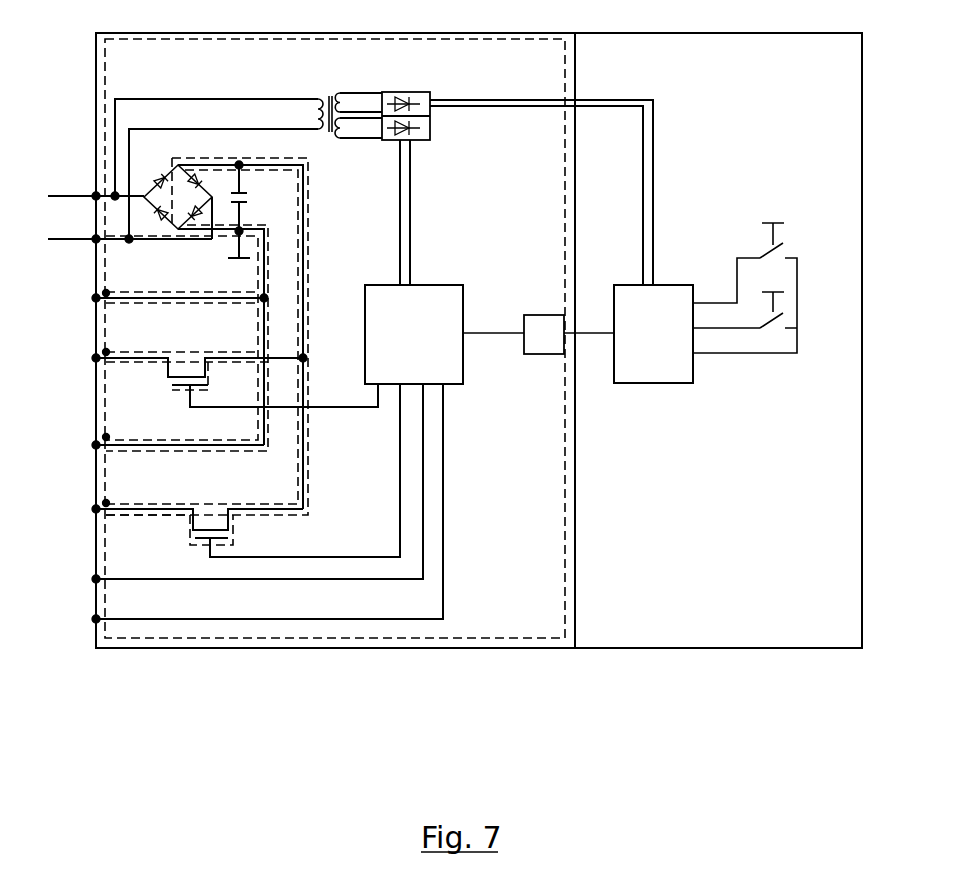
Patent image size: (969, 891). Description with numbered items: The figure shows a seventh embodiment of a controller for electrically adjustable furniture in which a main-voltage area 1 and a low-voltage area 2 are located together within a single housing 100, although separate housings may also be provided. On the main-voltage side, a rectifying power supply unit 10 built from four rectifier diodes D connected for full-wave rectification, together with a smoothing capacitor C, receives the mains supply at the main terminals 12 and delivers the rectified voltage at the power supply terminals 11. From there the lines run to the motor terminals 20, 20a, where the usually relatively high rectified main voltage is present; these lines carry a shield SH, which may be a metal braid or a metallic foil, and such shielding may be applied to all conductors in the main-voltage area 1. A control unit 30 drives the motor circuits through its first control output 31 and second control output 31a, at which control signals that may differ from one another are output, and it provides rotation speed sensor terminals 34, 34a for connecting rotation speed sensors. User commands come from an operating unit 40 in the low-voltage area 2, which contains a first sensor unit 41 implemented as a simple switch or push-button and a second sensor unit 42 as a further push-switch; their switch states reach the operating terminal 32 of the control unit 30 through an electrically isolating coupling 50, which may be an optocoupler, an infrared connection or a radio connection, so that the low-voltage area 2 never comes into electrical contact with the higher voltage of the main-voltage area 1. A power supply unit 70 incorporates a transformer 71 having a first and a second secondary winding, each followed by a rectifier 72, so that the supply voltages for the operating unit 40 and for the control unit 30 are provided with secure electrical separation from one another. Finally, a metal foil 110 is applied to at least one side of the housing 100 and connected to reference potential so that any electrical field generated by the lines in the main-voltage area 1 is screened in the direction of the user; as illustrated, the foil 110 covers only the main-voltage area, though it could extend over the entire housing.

The main-voltage area 1 is at (258, 665).
The low-voltage area 2 is at (634, 665).
The rectifying power supply unit 10 is at (157, 155).
The power supply terminals 11 is at (264, 298).
The main terminals 12 is at (96, 239).
The motor terminal 20 is at (96, 358).
The motor terminal 20a is at (96, 445).
The control unit 30 is at (465, 285).
The control output 31 is at (376, 407).
The control output 31a is at (398, 408).
The operating terminal 32 is at (468, 333).
The rotation speed sensor terminal 34 is at (96, 579).
The rotation speed sensor terminal 34a is at (96, 619).
The operating unit 40 is at (640, 385).
The sensor unit 41 is at (765, 255).
The sensor unit 42 is at (773, 325).
The coupling 50 is at (528, 354).
The power supply unit 70 is at (350, 176).
The transformer 71 is at (331, 80).
The rectifier 72 is at (418, 92).
The housing 100 is at (862, 448).
The foil 110 is at (387, 638).
The smoothing capacitor C is at (248, 193).
The rectifier diode D is at (177, 198).
The shield SH is at (186, 232).